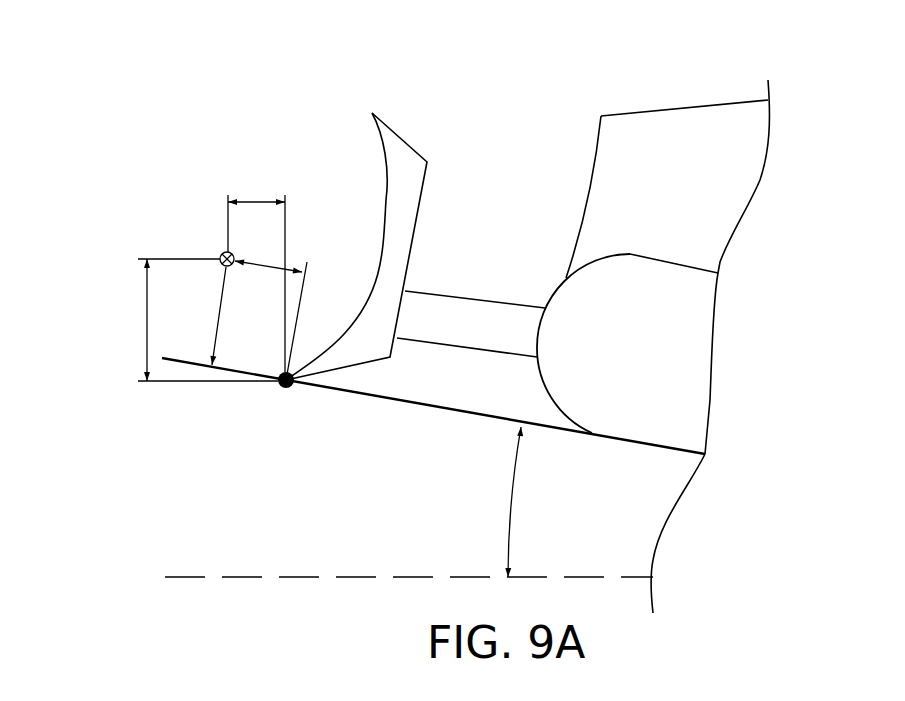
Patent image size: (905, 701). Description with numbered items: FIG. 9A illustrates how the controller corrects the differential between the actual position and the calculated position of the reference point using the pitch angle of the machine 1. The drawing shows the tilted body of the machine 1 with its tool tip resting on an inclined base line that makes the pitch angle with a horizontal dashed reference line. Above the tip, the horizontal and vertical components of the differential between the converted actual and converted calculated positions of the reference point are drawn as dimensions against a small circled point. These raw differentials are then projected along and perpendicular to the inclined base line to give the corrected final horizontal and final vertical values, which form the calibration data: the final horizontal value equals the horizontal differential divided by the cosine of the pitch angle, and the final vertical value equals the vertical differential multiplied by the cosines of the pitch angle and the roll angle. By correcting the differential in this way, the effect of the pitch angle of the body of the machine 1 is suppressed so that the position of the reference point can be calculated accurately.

The tool 1 is at (573, 113).